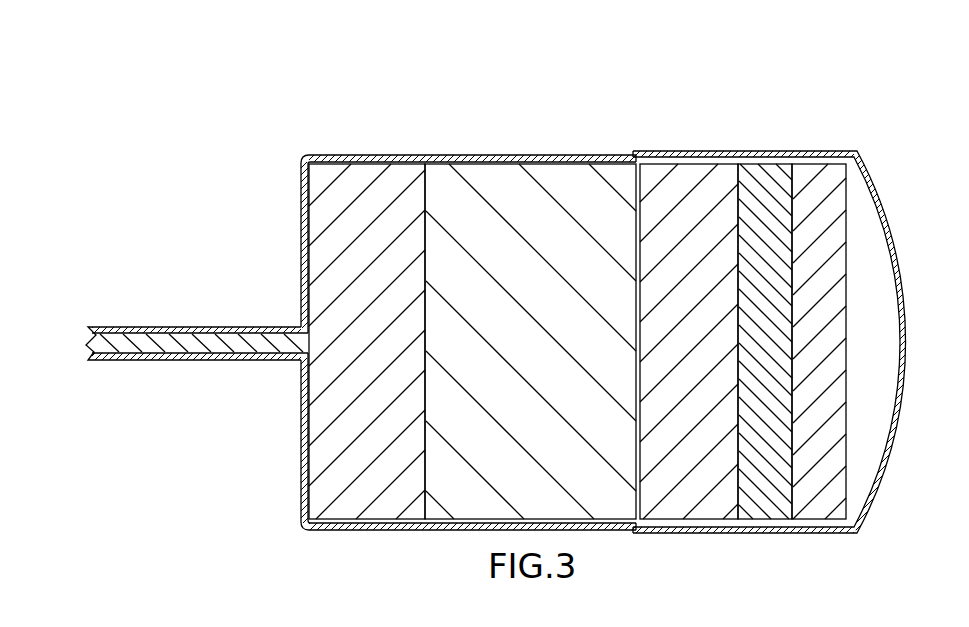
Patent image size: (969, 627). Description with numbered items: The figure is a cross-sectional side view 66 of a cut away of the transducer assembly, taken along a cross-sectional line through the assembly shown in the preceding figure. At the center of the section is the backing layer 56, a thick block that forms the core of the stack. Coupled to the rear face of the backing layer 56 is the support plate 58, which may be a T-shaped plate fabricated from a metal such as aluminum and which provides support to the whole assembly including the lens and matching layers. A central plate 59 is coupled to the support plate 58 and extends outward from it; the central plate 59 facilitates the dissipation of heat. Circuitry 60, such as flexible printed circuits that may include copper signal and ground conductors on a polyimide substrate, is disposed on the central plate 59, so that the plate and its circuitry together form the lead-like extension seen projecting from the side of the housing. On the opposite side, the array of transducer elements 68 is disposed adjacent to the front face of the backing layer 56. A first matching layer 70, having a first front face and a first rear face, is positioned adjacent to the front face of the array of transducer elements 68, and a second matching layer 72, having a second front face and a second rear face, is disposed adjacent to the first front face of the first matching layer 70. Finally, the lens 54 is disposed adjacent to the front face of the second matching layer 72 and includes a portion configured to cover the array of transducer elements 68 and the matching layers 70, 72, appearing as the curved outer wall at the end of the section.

The cross-sectional side view 66 is at (822, 53).
The lens 54 is at (884, 190).
The backing layer 56 is at (557, 168).
The support plate 58 is at (388, 168).
The array of transducer elements 68 is at (688, 168).
The first matching layer 70 is at (772, 168).
The second matching layer 72 is at (830, 168).
The circuitry 60 is at (163, 330).
The central plate 59 is at (196, 347).